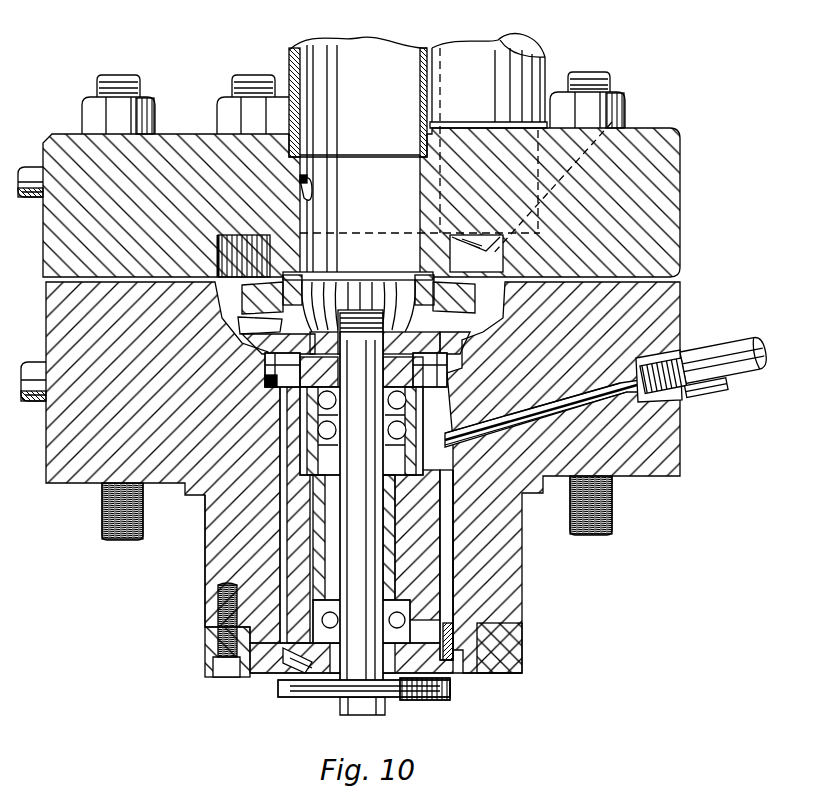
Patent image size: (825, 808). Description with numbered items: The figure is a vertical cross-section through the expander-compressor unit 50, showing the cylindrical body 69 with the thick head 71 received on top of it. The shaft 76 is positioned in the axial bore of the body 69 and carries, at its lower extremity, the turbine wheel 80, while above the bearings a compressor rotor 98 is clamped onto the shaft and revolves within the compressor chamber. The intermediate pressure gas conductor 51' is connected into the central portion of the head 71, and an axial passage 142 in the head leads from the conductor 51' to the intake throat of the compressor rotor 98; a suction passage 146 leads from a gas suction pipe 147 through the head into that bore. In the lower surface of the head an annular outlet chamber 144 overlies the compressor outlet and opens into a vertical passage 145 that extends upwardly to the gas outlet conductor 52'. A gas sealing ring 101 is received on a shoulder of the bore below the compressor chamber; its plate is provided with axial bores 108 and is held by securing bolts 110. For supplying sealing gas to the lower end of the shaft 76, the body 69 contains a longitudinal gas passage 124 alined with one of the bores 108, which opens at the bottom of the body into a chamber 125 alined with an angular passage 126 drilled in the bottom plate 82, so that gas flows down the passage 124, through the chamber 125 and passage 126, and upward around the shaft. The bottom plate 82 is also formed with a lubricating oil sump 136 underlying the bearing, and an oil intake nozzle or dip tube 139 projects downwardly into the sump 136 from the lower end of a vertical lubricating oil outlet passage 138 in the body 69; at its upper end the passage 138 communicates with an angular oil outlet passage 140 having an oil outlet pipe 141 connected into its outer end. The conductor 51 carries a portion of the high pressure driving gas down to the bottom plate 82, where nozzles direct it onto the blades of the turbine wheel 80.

The gas suction pipe 147 is at (25, 173).
The intermediate pressure gas conductor 51' is at (358, 149).
The gas outlet conductor 52' is at (488, 70).
The axial passage 142 is at (390, 163).
The suction passage 146 is at (312, 197).
The vertical passage 145 is at (584, 175).
The head 71 is at (657, 173).
The compressor rotor 98 is at (370, 293).
The annular outlet chamber 144 is at (476, 253).
The conductor 51 is at (26, 361).
The gas sealing ring 101 is at (282, 347).
The oil outlet pipe 141 is at (713, 355).
The axial bores 108 is at (267, 390).
The securing bolts 110 is at (462, 378).
The angular oil outlet passage 140 is at (560, 407).
The shaft 76 is at (374, 483).
The gas passage 124 is at (280, 522).
The cylindrical body 69 is at (213, 562).
The lubricating oil outlet passage 138 is at (447, 567).
The expander-compressor unit 50 is at (512, 585).
The bottom plate 82 is at (207, 642).
The chamber 125 is at (293, 640).
The angular passage 126 is at (277, 677).
The turbine wheel 80 is at (333, 690).
The lubricating oil sump 136 is at (423, 690).
The oil intake nozzle 139 is at (460, 653).